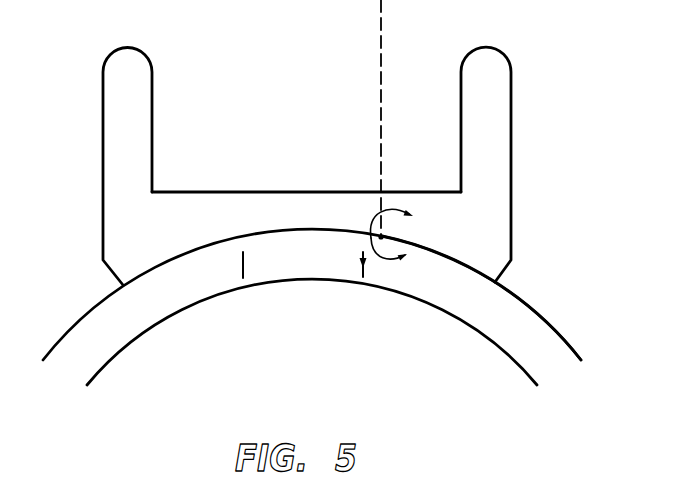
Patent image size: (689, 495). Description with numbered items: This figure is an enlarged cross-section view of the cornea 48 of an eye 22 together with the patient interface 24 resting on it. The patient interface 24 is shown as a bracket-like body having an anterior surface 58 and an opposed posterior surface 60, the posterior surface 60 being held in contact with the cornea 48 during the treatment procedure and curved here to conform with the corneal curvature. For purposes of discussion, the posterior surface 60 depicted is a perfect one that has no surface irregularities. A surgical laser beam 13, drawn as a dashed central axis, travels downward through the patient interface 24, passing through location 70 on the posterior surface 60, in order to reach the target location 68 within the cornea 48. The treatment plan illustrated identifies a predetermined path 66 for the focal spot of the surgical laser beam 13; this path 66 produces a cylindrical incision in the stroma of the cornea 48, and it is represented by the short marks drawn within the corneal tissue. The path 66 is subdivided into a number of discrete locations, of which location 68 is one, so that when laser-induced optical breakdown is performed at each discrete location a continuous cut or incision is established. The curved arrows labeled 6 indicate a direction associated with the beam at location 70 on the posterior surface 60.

The surgical laser beam 13 is at (379, 48).
The patient interface 24 is at (195, 212).
The anterior surface 58 is at (259, 192).
The location 70 is at (378, 233).
The rotation direction 6 is at (403, 247).
The eye 22 is at (82, 316).
The posterior surface 60 is at (467, 266).
The cornea 48 is at (115, 343).
The path 66 is at (239, 267).
The location 68 is at (360, 265).